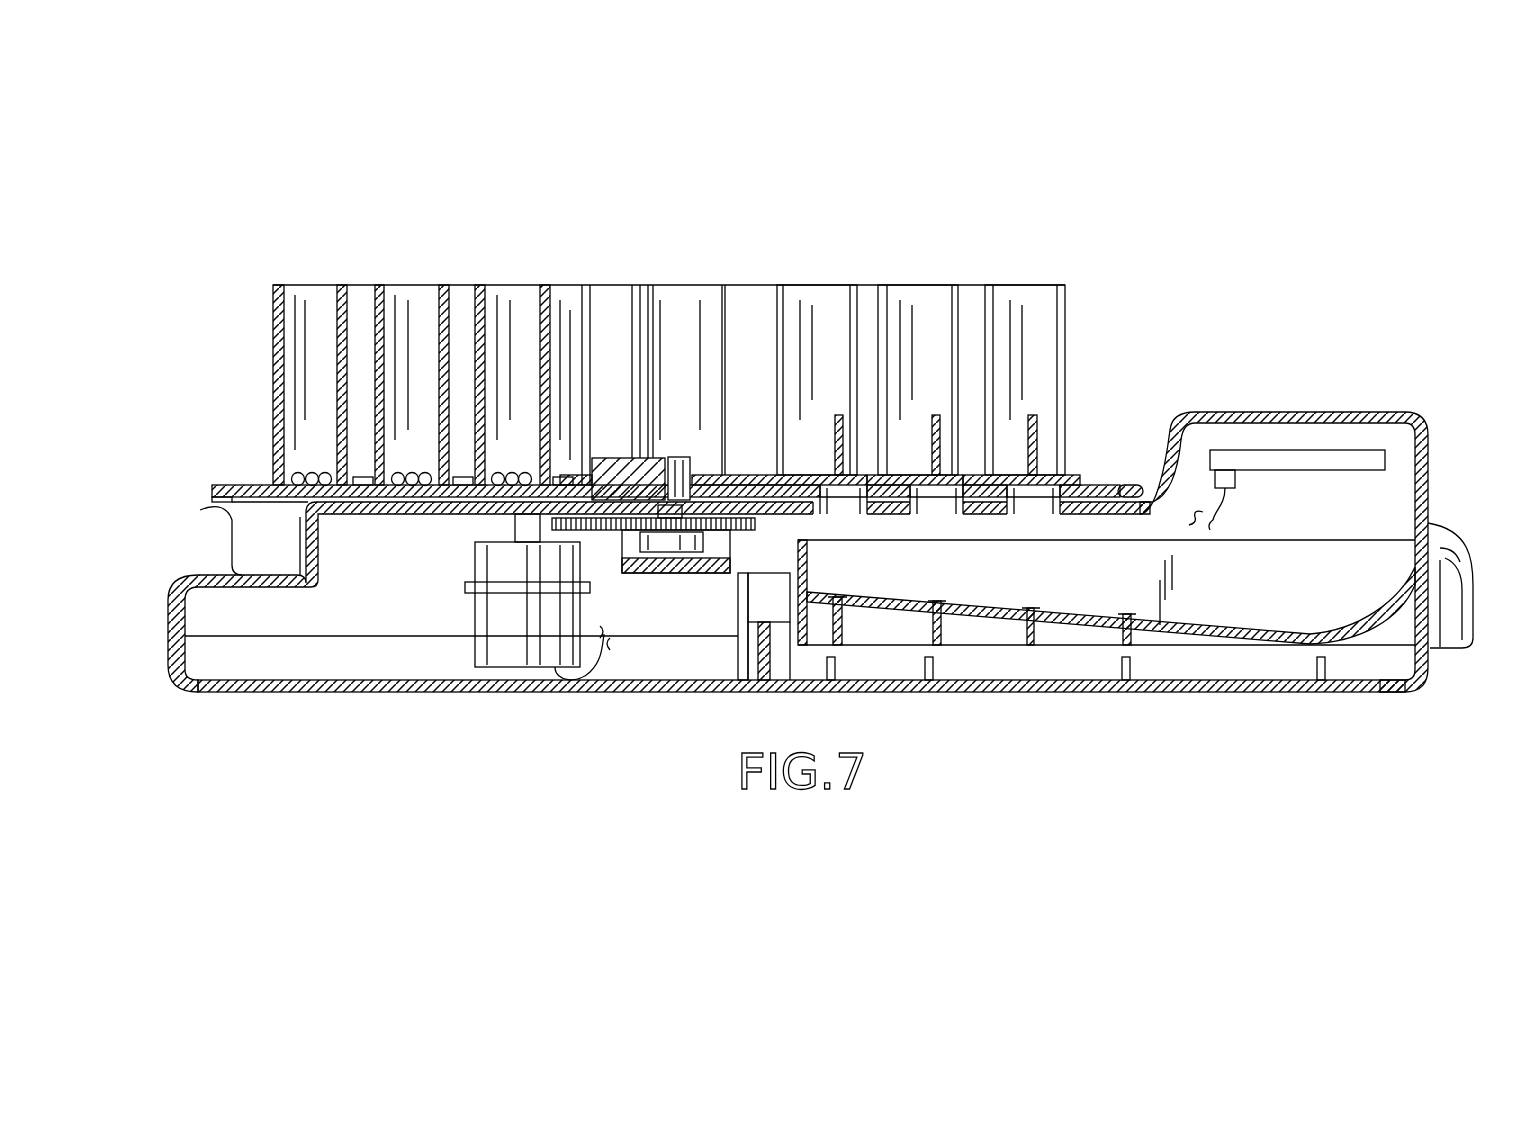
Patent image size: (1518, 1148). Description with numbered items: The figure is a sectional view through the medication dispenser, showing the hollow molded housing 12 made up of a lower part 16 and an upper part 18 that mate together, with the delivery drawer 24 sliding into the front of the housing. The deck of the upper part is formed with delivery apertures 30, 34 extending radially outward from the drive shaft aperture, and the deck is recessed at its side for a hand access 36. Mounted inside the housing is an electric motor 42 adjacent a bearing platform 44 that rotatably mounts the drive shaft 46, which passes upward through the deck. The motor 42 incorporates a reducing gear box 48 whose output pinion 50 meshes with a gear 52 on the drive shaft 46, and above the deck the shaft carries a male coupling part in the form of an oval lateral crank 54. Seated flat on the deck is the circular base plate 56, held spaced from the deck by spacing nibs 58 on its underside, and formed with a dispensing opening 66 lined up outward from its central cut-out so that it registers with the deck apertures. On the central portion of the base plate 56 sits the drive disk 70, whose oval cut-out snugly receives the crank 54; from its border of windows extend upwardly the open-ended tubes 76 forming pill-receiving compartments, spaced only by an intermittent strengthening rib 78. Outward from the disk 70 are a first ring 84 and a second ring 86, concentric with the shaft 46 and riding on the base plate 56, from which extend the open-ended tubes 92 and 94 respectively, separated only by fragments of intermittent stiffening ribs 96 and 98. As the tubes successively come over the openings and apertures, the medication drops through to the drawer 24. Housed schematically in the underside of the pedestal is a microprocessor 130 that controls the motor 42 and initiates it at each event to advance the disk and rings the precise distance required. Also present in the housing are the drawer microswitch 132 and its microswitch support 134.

The housing 12 is at (1428, 412).
The lower part 16 is at (205, 695).
The upper part 18 is at (197, 577).
The delivery drawer 24 is at (1262, 585).
The delivery aperture 30 is at (827, 508).
The delivery aperture 34 is at (1018, 508).
The hand access 36 is at (232, 528).
The electric motor 42 is at (478, 616).
The bearing platform 44 is at (628, 575).
The drive shaft 46 is at (673, 455).
The reducing gear box 48 is at (478, 557).
The output pinion 50 is at (587, 530).
The gear 52 is at (743, 530).
The oval lateral crank 54 is at (647, 456).
The circular base plate 56 is at (1135, 485).
The spacing nibs 58 is at (215, 503).
The dispensing opening 66 is at (925, 508).
The drive disk 70 is at (817, 474).
The tube 76 is at (832, 290).
The strengthening rib 78 is at (835, 415).
The first ring 84 is at (910, 474).
The second ring 86 is at (1072, 474).
The tube 92 is at (908, 292).
The tube 94 is at (1025, 292).
The stiffening rib 96 is at (933, 415).
The stiffening rib 98 is at (1029, 415).
The microprocessor 130 is at (1273, 471).
The drawer microswitch 132 is at (760, 592).
The microswitch support 134 is at (747, 680).